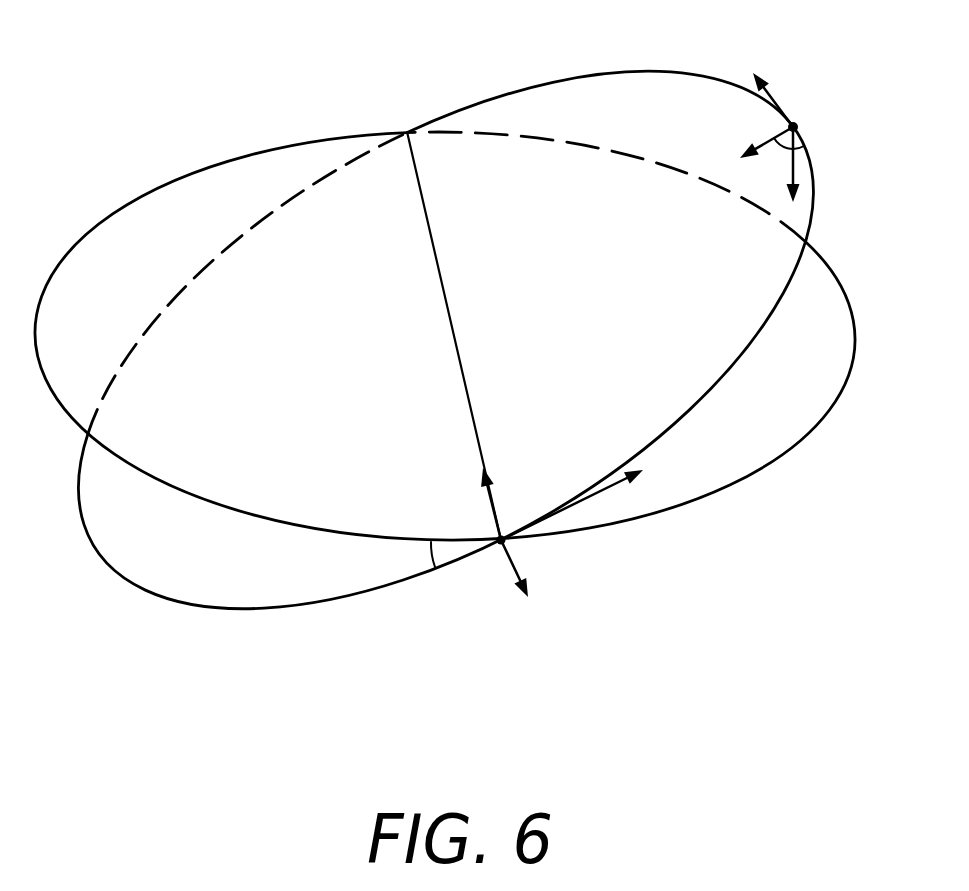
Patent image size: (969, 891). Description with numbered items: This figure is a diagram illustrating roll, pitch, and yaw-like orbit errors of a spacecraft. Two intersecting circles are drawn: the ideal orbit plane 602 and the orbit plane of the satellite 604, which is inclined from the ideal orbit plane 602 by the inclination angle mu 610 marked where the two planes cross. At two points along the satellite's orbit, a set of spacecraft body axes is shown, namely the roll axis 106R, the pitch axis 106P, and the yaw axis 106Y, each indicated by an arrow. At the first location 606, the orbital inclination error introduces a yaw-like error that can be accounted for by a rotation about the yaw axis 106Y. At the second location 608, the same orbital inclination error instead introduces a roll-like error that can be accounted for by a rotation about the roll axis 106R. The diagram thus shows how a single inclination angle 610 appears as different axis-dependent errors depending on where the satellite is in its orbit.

The ideal orbit plane 602 is at (167, 185).
The orbit plane of the satellite 604 is at (530, 85).
The first location 606 is at (505, 547).
The second location 608 is at (797, 120).
The inclination angle 610 is at (383, 565).
The spacecraft roll axis 106R is at (607, 482).
The spacecraft yaw axis 106Y is at (492, 507).
The spacecraft pitch axis 106P is at (513, 568).